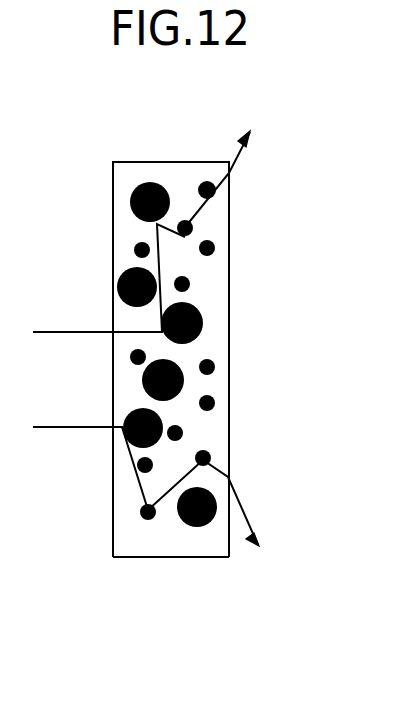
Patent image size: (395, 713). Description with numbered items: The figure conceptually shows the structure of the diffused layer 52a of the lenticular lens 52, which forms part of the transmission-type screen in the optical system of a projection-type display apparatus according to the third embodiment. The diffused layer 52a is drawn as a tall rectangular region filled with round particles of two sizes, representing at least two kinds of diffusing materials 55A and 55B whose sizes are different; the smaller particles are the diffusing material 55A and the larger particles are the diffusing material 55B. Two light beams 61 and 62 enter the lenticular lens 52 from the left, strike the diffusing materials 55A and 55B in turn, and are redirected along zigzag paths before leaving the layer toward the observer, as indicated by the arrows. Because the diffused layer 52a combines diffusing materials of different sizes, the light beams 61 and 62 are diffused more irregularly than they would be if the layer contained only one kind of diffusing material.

The lenticular lens 52 is at (230, 123).
The diffused layer 52a is at (182, 542).
The diffusing material 55A is at (215, 246).
The diffusing material 55B is at (203, 320).
The light beam 61 is at (57, 332).
The light beam 62 is at (52, 428).